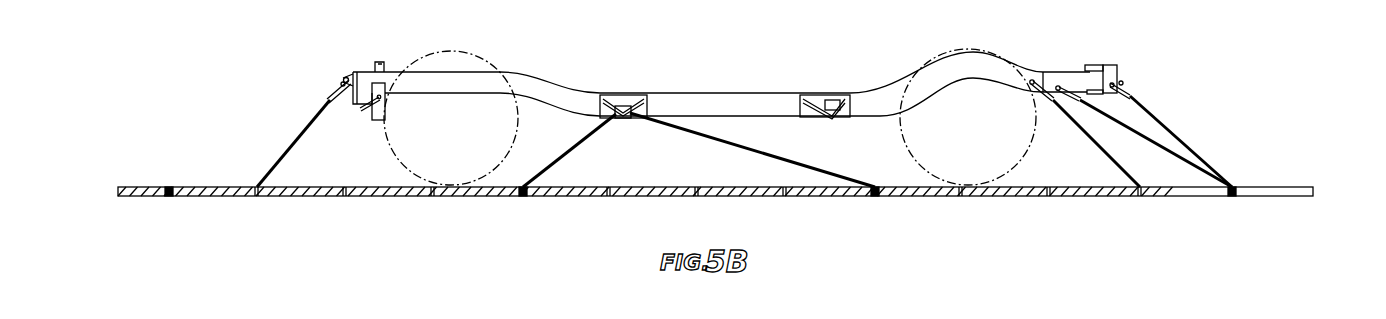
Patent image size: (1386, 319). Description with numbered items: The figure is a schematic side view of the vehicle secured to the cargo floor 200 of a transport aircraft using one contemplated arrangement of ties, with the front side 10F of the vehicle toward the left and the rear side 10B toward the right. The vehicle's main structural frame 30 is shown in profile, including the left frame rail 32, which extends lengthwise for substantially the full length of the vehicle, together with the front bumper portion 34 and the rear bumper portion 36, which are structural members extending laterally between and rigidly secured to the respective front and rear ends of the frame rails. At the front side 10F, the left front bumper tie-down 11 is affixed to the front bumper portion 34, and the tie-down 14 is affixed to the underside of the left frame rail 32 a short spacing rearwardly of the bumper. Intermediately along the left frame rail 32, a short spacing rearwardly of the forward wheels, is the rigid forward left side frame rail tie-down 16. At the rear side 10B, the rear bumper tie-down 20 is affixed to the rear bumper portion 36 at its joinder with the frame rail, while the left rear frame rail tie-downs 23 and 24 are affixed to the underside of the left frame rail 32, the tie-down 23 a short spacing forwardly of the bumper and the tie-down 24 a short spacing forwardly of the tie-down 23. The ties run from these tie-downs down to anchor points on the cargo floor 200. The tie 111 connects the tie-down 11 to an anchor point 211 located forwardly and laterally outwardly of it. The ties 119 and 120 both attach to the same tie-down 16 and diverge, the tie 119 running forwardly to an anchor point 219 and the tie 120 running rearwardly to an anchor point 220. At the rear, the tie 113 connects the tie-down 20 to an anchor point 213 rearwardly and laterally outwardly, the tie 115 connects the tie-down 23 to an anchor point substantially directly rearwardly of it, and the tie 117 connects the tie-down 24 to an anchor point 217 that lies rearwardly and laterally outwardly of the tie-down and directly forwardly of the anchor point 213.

The front side 10F is at (212, 86).
The rear side 10B is at (1270, 87).
The left front bumper tie-down 11 is at (330, 88).
The tie-down 14 is at (368, 121).
The forward left side frame rail tie-down 16 is at (612, 104).
The rear bumper tie-down 20 is at (1135, 97).
The left rear frame rail tie-down 23 is at (1060, 86).
The left rear frame rail tie-down 24 is at (1037, 78).
The main structural frame 30 is at (718, 92).
The left frame rail 32 is at (775, 105).
The front bumper portion 34 is at (345, 72).
The rear bumper portion 36 is at (1105, 65).
The tie 111 is at (293, 143).
The tie 113 is at (1165, 126).
The tie 115 is at (1170, 152).
The tie 117 is at (1105, 153).
The tie 119 is at (586, 137).
The tie 120 is at (760, 151).
The deck/track 200 is at (1280, 186).
The anchor point 211 is at (255, 186).
The anchor point 213 is at (1233, 196).
The anchor point 217 is at (1142, 196).
The anchor point 219 is at (523, 196).
The anchor point 220 is at (877, 196).